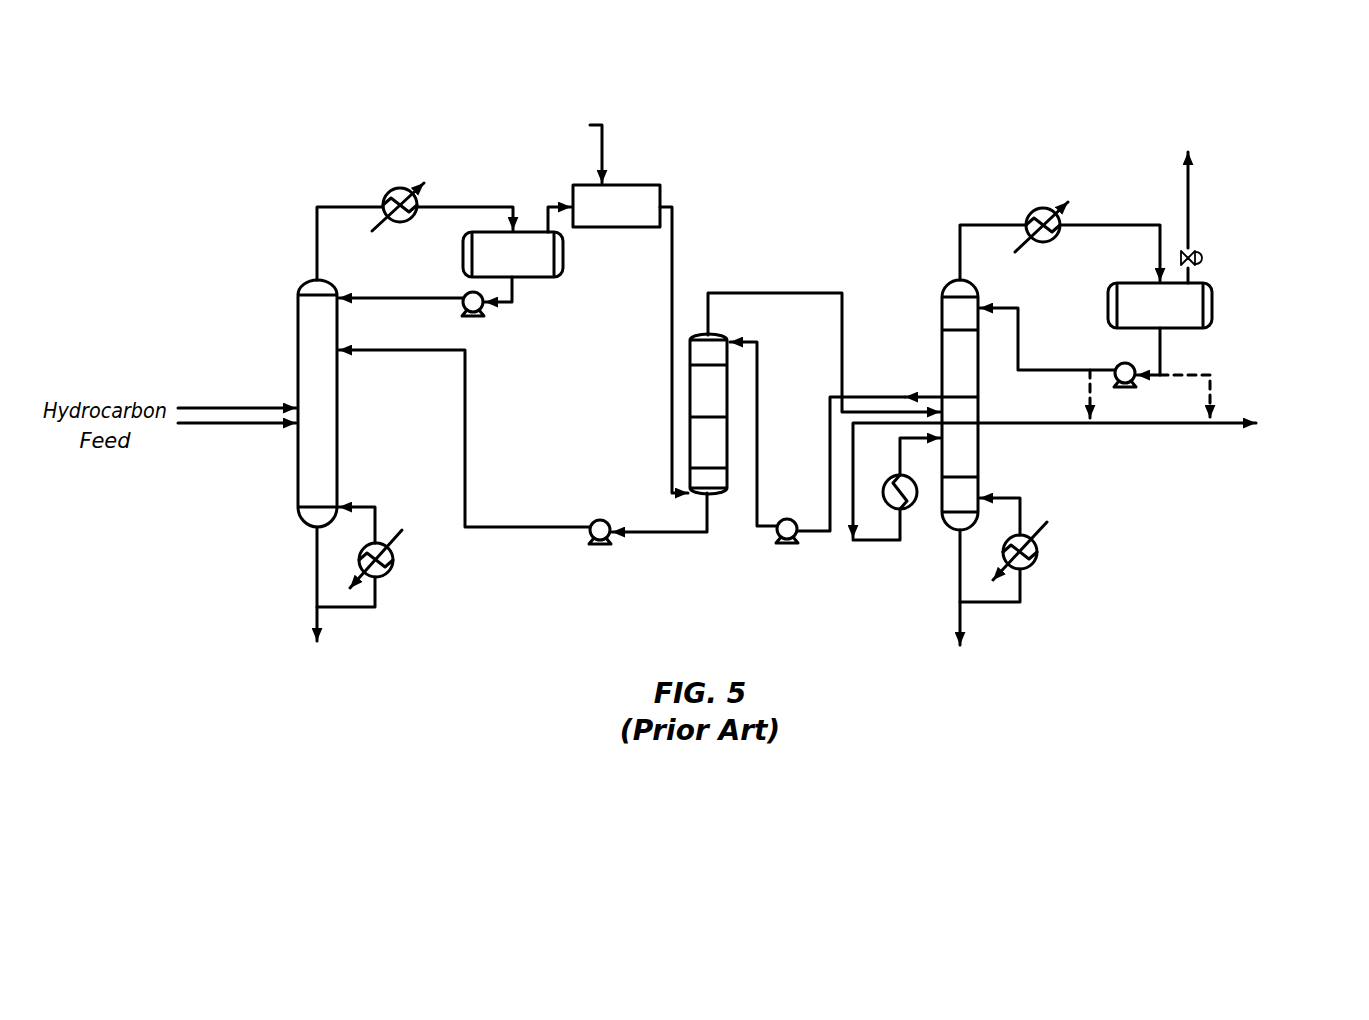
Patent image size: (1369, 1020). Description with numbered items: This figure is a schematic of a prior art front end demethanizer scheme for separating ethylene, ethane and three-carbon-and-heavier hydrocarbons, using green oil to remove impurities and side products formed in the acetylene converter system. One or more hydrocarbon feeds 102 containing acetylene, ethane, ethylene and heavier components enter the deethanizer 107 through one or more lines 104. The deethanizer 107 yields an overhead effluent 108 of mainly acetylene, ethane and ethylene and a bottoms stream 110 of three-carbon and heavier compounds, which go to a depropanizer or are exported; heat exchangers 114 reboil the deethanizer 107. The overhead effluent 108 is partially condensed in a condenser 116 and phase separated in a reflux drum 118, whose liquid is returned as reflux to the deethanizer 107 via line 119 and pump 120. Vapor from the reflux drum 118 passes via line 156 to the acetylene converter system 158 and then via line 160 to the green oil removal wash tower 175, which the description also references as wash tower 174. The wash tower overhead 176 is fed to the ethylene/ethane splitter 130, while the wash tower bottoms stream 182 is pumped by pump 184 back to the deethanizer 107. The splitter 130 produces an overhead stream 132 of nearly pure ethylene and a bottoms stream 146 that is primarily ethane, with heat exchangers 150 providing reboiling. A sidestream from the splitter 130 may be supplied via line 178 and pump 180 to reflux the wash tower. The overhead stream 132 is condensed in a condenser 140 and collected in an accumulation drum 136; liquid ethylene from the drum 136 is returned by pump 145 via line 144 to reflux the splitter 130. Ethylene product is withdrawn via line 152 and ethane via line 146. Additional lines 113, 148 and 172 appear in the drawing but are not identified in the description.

The hydrocarbon feed 102 is at (258, 405).
The line 104 is at (258, 426).
The deethanizer 107 is at (298, 342).
The overhead effluent 108 is at (317, 243).
The bottoms stream 110 is at (317, 570).
The reboiler return line 113 is at (352, 608).
The heat exchanger 114 is at (390, 577).
The condenser 116 is at (392, 188).
The reflux drum 118 is at (463, 258).
The line 119 is at (515, 283).
The pump 120 is at (478, 316).
The line 156 is at (563, 203).
The acetylene converter system 158 is at (638, 185).
The line 160 is at (672, 248).
The wash tower 175 is at (690, 348).
The wash tower overhead 176 is at (790, 293).
The line 178 is at (910, 395).
The pump 180 is at (790, 545).
The wash tower bottoms stream 182 is at (685, 534).
The pump 184 is at (595, 520).
The side draw line 172 is at (875, 545).
The green oil removal wash tower 174 is at (900, 512).
The ethylene/ethane splitter 130 is at (985, 390).
The overhead stream 132 is at (960, 240).
The condenser 140 is at (1035, 208).
The accumulation drum 136 is at (1222, 310).
The line 144 is at (1162, 338).
The pump 145 is at (1128, 388).
The bottoms stream 146 is at (955, 575).
The reboiler return line 148 is at (985, 605).
The heat exchanger 150 is at (1040, 565).
The line 152 is at (1222, 427).